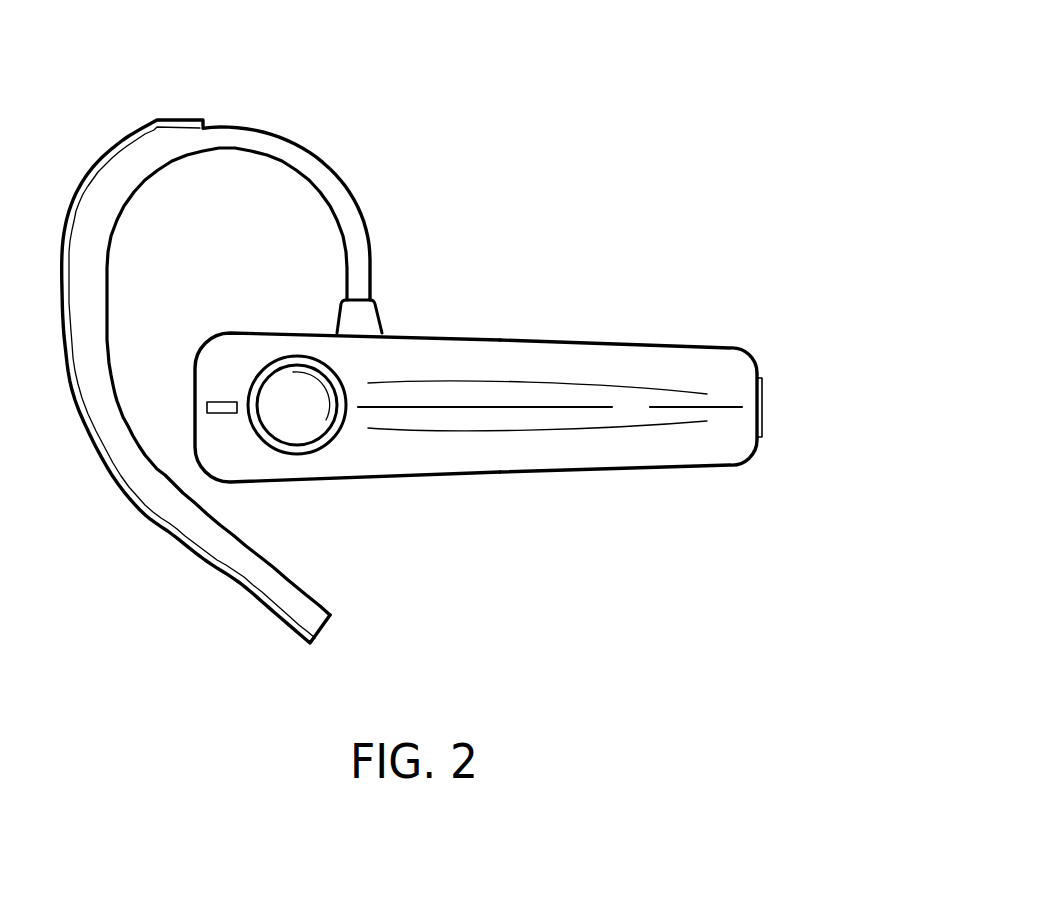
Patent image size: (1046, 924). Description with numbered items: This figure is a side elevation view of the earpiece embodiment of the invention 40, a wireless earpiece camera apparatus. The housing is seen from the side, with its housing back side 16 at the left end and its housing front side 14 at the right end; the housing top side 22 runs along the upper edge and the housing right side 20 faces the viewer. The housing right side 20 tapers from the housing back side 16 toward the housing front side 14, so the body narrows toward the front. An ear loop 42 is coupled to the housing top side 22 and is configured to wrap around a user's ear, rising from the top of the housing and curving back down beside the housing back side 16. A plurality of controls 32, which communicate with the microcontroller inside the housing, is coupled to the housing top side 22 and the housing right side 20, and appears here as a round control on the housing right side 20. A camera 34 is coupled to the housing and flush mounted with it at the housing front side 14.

The earpiece embodiment of the invention 40 is at (694, 188).
The ear loop 42 is at (247, 137).
The housing back side 16 is at (193, 376).
The housing front side 14 is at (757, 443).
The housing top side 22 is at (498, 340).
The housing right side 20 is at (503, 430).
The plurality of controls 32 is at (300, 422).
The camera 34 is at (759, 407).